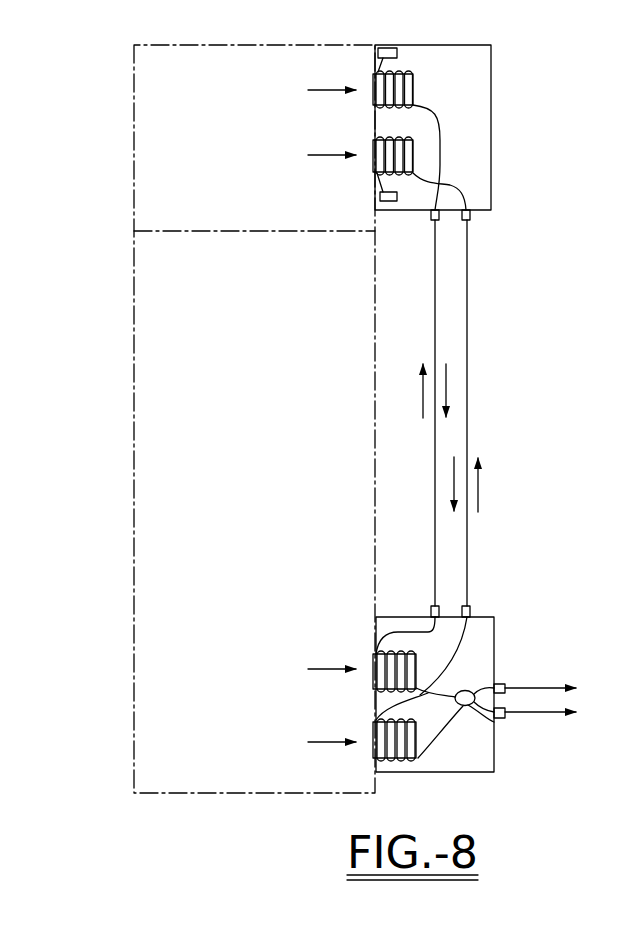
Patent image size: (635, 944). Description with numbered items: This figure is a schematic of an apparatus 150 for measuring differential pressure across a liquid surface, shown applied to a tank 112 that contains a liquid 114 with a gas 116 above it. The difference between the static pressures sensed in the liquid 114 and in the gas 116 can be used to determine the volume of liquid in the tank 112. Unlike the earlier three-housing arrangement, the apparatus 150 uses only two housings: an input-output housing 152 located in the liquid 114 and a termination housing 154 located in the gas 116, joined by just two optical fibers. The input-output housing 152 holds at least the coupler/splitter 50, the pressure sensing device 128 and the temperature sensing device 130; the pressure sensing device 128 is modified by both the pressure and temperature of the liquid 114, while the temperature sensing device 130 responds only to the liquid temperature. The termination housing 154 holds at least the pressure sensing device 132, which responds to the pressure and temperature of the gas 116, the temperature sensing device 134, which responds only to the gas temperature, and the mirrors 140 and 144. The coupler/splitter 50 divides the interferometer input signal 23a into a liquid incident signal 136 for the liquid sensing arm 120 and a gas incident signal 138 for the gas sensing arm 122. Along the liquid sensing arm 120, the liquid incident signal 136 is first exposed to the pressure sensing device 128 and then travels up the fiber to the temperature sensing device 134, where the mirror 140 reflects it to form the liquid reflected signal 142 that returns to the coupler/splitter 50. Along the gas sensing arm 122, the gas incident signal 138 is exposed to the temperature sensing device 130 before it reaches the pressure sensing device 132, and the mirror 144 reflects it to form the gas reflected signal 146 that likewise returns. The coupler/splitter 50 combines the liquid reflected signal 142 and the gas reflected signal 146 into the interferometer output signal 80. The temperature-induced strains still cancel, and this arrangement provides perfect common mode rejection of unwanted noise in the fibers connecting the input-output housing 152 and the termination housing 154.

The tank 112 is at (131, 134).
The liquid 114 is at (237, 464).
The gas 116 is at (237, 155).
The liquid sensing arm 120 is at (426, 701).
The gas sensing arm 122 is at (397, 620).
The pressure sensing device 128 is at (373, 755).
The temperature sensing device 130 is at (373, 656).
The pressure sensing device 132 is at (373, 76).
The temperature sensing device 134 is at (375, 170).
The liquid incident signal 136 is at (478, 490).
The gas incident signal 138 is at (418, 388).
The mirror 140 is at (380, 198).
The liquid reflected signal 142 is at (455, 486).
The mirror 144 is at (388, 47).
The gas reflected signal 146 is at (452, 381).
The apparatus 150 is at (421, 119).
The input-output housing 152 is at (494, 630).
The termination housing 154 is at (492, 158).
The coupler/splitter 50 is at (471, 707).
The interferometer input signal 23a is at (553, 688).
The interferometer output signal 80 is at (553, 713).